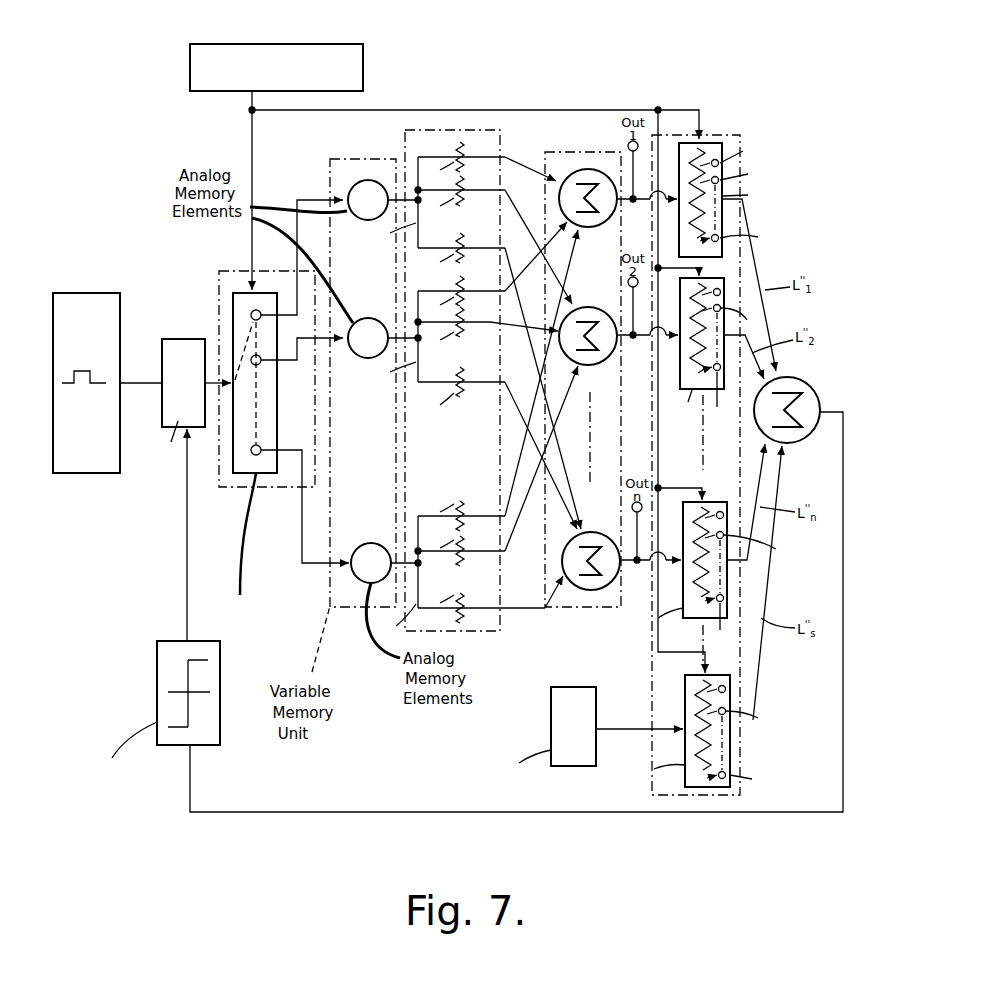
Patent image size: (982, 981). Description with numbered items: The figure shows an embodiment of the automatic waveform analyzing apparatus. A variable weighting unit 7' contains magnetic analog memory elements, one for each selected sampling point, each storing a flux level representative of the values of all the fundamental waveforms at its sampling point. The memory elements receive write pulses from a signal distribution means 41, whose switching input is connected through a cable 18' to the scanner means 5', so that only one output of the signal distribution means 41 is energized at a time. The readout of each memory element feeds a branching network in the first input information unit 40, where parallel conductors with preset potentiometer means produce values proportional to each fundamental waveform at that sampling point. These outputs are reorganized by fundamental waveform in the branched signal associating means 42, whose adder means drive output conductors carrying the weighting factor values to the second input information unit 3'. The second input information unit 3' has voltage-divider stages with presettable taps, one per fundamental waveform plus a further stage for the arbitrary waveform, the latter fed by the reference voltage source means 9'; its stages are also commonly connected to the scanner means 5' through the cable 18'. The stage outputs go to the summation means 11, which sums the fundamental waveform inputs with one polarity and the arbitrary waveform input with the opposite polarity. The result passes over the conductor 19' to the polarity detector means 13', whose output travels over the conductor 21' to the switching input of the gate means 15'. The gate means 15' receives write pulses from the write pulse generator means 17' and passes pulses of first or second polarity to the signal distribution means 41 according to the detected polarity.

The scanner means 5' is at (276, 52).
The cable 18' is at (502, 436).
The variable weighting unit 7' is at (363, 365).
The first input information unit 40 is at (470, 128).
The branched signal associating means 42 is at (568, 150).
The second input information unit 3' is at (728, 177).
The signal distribution means 41 is at (240, 271).
The write pulse generator means 17' is at (86, 363).
The gate means 15' is at (167, 378).
The conductor 21' is at (167, 535).
The polarity detector means 13' is at (145, 722).
The reference voltage source means 9' is at (524, 737).
The conductor 19' is at (516, 630).
The summation means 11 is at (808, 386).